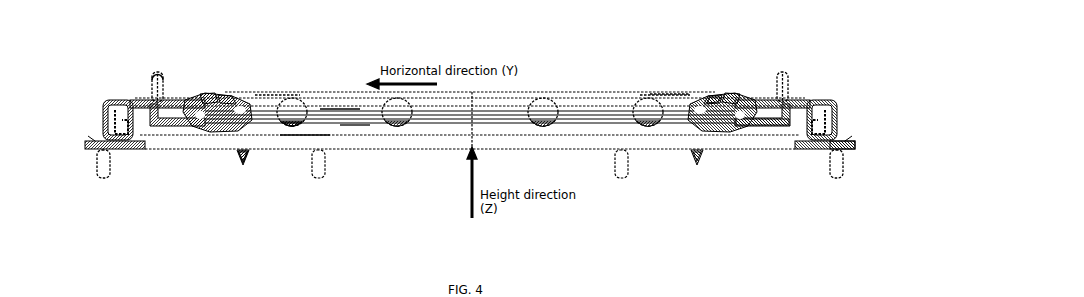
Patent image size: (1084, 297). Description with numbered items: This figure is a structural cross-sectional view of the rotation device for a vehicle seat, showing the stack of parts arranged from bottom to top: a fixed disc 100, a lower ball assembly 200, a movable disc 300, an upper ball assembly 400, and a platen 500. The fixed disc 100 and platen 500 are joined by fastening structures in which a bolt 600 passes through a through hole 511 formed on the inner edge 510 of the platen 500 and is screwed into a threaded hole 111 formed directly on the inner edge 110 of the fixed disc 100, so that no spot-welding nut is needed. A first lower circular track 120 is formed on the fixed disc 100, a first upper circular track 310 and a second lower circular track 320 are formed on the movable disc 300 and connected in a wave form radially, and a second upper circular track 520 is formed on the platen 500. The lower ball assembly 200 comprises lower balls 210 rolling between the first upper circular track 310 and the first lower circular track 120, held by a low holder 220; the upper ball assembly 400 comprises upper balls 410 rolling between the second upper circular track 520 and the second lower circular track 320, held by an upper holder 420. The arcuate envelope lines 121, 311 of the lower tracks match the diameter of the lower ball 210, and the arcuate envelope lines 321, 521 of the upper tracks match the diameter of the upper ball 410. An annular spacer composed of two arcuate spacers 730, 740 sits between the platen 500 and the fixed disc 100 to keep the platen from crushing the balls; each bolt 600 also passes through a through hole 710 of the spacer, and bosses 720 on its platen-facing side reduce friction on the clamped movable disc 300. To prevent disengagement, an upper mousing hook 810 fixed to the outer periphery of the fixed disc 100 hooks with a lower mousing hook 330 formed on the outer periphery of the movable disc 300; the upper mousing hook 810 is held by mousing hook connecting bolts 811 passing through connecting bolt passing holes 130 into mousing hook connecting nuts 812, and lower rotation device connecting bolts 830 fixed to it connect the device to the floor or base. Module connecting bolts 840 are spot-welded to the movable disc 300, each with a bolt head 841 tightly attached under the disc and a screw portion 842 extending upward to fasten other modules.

The fixed disc 100 is at (140, 142).
The inner edge of the fixed disc 110 is at (352, 126).
The threaded hole 111 is at (300, 136).
The first lower circular track 120 is at (736, 126).
The arcuate envelope line of the first lower circular track 121 is at (790, 167).
The upper mousing hook connecting bolt passing hole 130 is at (218, 195).
The lower ball assembly 200 is at (212, 130).
The lower ball 210 is at (192, 100).
The low holder 220 is at (147, 98).
The movable disc 300 is at (178, 128).
The first upper circular track 310 is at (748, 108).
The arcuate envelope line of the first upper circular track 311 is at (779, 63).
The second lower circular track 320 is at (708, 120).
The arcuate envelope line of the second lower circular track 321 is at (701, 172).
The lower mousing hook 330 is at (833, 130).
The upper ball assembly 400 is at (722, 124).
The upper ball 410 is at (225, 100).
The upper holder 420 is at (212, 98).
The platen 500 is at (724, 104).
The inner edge of the platen 510 is at (337, 108).
The through hole 511 is at (275, 100).
The second upper circular track 520 is at (717, 96).
The arcuate envelope line of the second upper circular track 521 is at (705, 48).
The bolt 600 is at (406, 122).
The through hole of the spacer 710 is at (298, 105).
The boss 720 is at (284, 128).
The arcuate spacer 730 is at (299, 180).
The arcuate spacer 740 is at (317, 181).
The upper mousing hook 810 is at (837, 100).
The mousing hook connecting bolt 811 is at (240, 165).
The mousing hook connecting nut 812 is at (199, 195).
The lower rotation device connecting bolt 830 is at (826, 147).
The module connecting bolt 840 is at (788, 84).
The bolt head 841 is at (848, 148).
The screw portion 842 is at (156, 74).